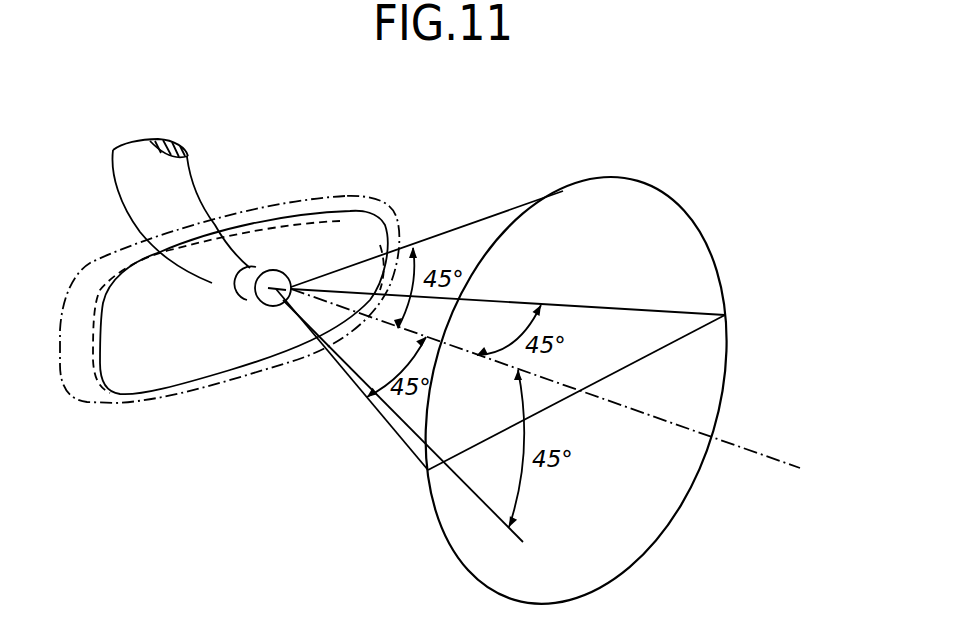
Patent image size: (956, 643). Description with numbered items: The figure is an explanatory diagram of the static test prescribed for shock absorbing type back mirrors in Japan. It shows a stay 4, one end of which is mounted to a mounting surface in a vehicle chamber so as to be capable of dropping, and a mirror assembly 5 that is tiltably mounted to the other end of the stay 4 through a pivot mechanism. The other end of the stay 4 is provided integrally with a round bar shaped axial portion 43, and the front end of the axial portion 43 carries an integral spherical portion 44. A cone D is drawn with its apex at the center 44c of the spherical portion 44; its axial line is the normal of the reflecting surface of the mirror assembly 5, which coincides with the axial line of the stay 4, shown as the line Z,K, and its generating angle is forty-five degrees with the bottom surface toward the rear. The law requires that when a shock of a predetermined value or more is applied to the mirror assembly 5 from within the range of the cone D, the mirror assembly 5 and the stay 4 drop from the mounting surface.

The stay 4 is at (199, 178).
The mirror assembly 5 is at (385, 204).
The axial portion 43 is at (250, 268).
The spherical portion 44 is at (282, 271).
The center of the spherical portion 44c is at (262, 306).
The cone D is at (651, 188).
The axial line of the stay / normal of the reflecting surface Z,K is at (766, 455).